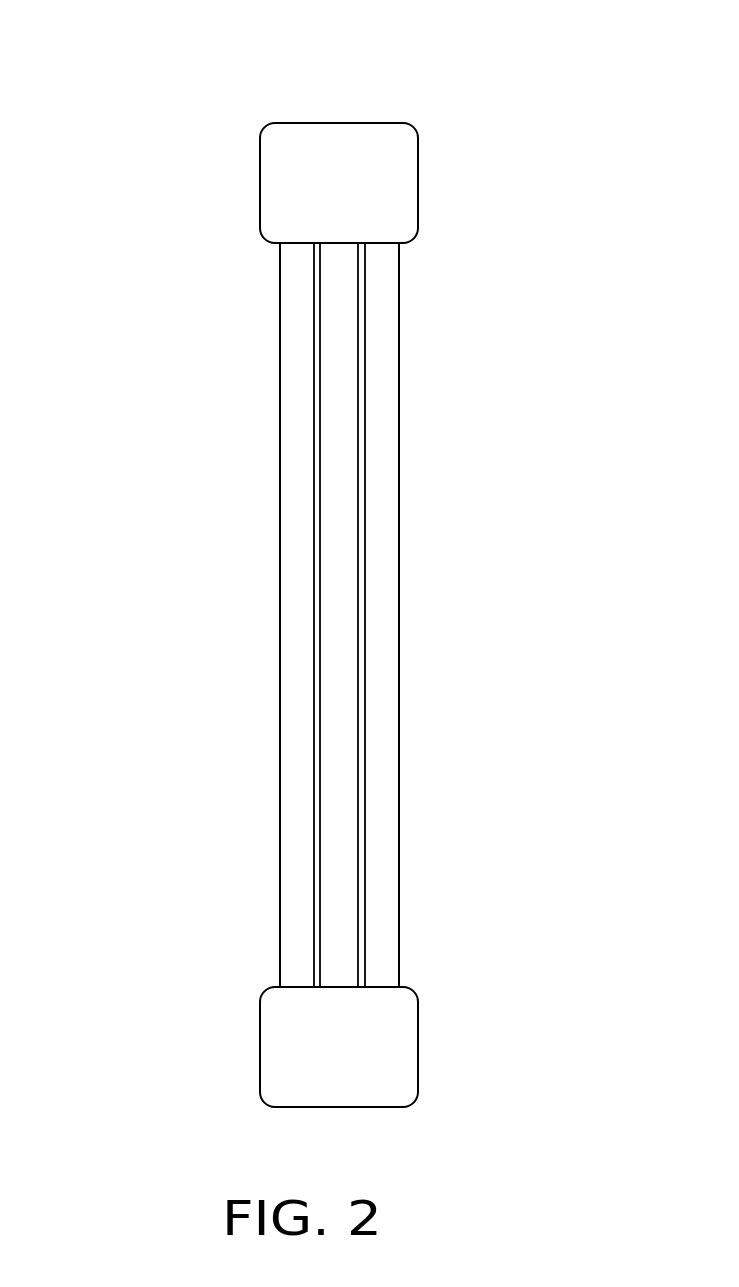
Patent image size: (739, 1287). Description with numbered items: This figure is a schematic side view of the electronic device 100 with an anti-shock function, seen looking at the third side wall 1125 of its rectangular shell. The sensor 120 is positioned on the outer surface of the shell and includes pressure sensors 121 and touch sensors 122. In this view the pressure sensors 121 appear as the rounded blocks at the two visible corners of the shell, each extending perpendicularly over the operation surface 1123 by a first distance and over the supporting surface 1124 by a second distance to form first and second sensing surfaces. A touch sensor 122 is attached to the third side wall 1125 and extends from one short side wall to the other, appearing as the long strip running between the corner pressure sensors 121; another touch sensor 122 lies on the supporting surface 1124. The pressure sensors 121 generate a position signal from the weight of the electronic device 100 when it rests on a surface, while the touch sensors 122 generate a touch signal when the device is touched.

The electronic device 100 is at (369, 554).
The sensor 120 is at (456, 555).
The pressure sensor 121 is at (400, 173).
The touch sensor 122 is at (343, 318).
The operation surface 1123 is at (280, 740).
The supporting surface 1124 is at (400, 625).
The third side wall 1125 is at (298, 440).